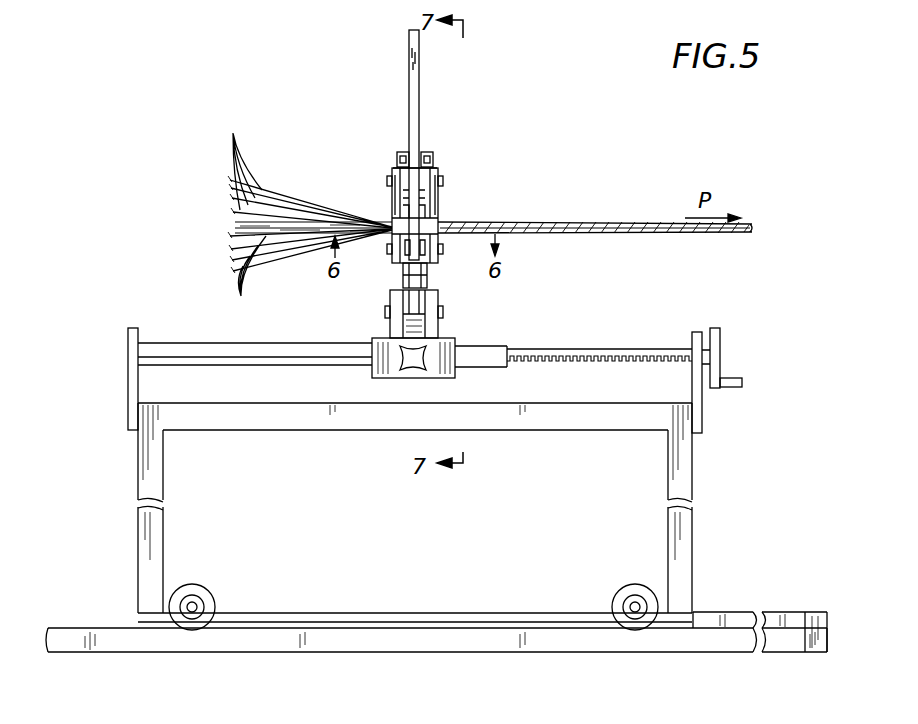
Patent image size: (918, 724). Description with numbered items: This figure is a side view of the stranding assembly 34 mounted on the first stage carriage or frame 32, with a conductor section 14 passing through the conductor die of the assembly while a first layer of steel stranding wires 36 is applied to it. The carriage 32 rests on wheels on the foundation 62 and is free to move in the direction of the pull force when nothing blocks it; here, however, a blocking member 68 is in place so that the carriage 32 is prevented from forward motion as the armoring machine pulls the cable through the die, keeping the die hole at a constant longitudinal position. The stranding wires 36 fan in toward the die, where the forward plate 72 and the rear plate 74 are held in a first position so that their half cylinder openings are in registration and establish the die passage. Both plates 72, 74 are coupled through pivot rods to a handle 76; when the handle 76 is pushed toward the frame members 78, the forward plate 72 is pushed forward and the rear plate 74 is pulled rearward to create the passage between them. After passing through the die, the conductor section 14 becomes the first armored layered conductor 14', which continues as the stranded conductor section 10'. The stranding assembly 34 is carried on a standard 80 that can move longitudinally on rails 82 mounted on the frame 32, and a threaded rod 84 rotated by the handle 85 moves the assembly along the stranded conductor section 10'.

The stranded conductor section 10' is at (595, 196).
The conductor section 14 is at (313, 182).
The first armored layered conductor 14' is at (595, 197).
The first stage carriage or frame 32 is at (710, 469).
The stranding assembly 34 is at (467, 150).
The stranding wires 36 is at (302, 215).
The foundation 62 is at (557, 644).
The blocking member 68 is at (738, 610).
The forward plate 72 is at (426, 247).
The rear plate 74 is at (397, 212).
The handle 76 is at (416, 96).
The frame members 78 is at (397, 180).
The standard 80 is at (432, 320).
The rails 82 is at (162, 352).
The threaded rod 84 is at (587, 350).
The handle 85 is at (721, 360).